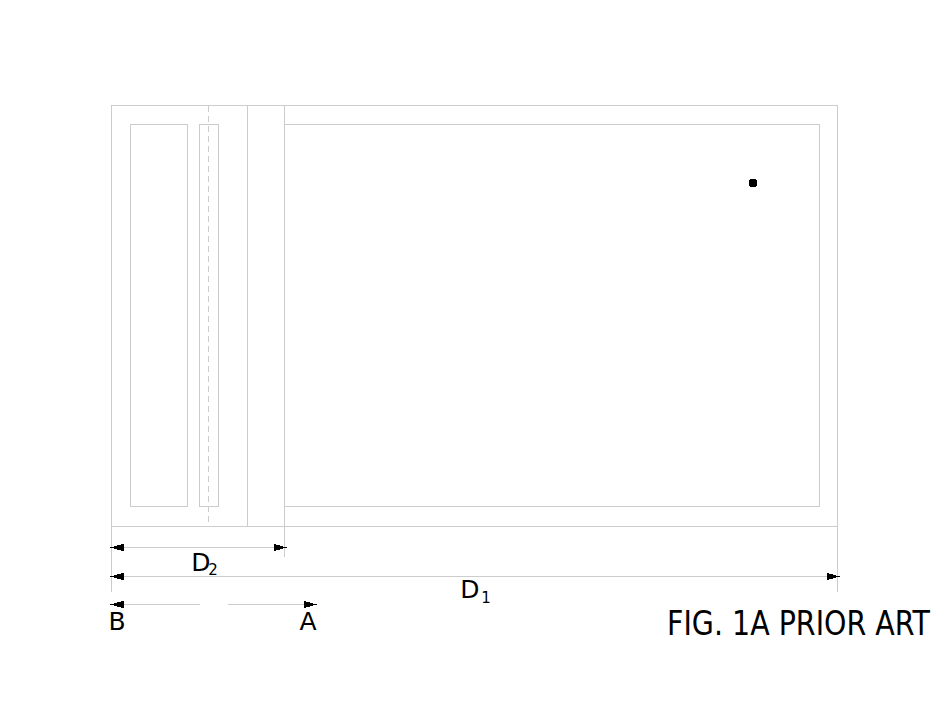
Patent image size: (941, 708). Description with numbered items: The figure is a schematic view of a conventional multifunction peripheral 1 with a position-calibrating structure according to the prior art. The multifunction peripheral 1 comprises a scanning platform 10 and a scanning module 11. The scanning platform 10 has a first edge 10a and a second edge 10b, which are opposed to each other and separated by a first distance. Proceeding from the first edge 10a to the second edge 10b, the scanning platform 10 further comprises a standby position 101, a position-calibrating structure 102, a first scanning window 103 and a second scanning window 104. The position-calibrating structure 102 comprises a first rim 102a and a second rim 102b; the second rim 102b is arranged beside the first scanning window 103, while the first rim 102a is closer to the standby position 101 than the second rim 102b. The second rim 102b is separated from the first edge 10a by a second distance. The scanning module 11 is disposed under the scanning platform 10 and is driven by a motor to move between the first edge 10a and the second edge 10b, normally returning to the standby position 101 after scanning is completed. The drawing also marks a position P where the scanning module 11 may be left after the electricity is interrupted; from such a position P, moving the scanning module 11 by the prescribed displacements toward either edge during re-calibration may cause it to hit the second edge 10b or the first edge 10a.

The multifunction peripheral 1 is at (892, 64).
The scanning platform 10 is at (670, 97).
The first edge 10a is at (112, 317).
The second edge 10b is at (838, 217).
The scanning module 11 is at (203, 424).
The standby position 101 is at (209, 106).
The position-calibrating structure 102 is at (313, 65).
The first rim 102a is at (247, 155).
The second rim 102b is at (286, 155).
The first scanning window 103 is at (503, 152).
The second scanning window 104 is at (158, 155).
The position P is at (753, 178).